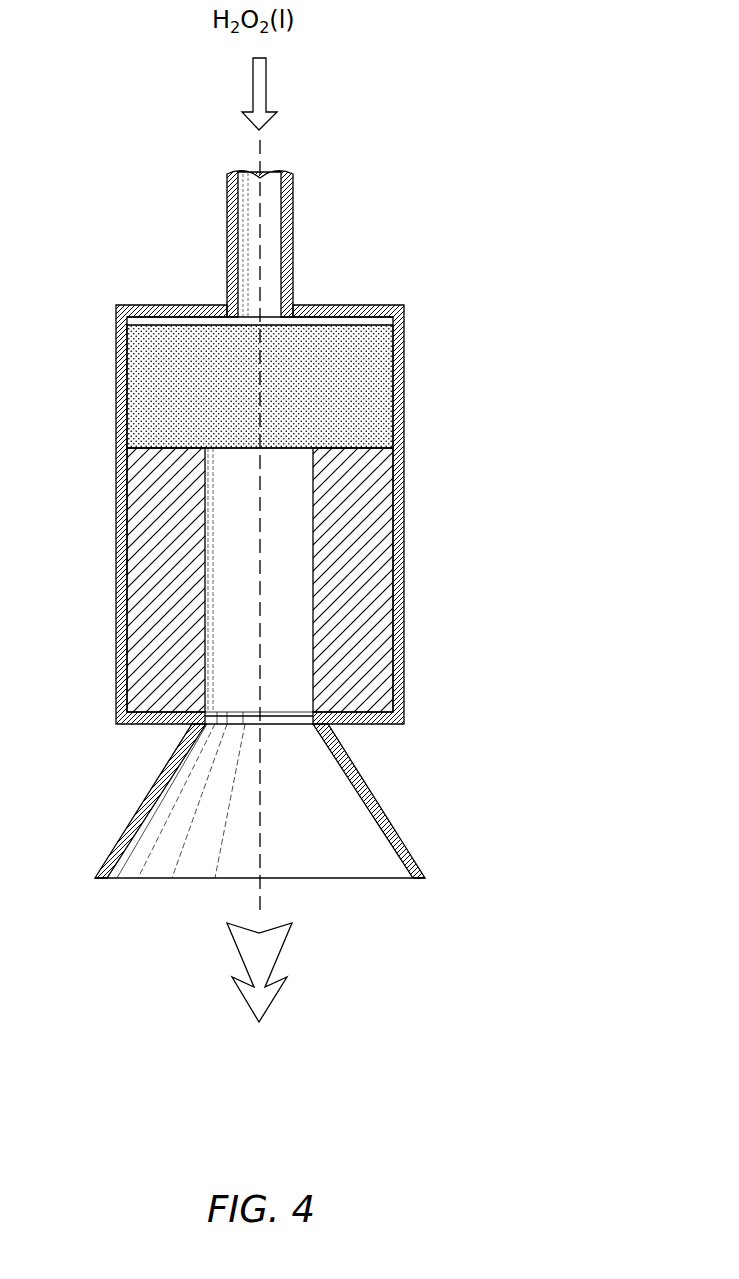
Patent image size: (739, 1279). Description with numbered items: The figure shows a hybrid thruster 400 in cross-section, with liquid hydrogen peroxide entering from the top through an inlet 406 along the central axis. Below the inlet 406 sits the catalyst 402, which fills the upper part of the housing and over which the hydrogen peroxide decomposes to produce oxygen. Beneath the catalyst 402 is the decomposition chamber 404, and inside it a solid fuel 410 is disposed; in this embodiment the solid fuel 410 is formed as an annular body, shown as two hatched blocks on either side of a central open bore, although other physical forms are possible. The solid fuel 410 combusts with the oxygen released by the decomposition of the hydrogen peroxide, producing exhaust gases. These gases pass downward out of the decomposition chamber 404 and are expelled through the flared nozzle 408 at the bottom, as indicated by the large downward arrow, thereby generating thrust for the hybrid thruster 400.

The hybrid thruster 400 is at (523, 430).
The catalyst 402 is at (127, 392).
The decomposition chamber 404 is at (116, 512).
The inlet 406 is at (227, 269).
The nozzle 408 is at (130, 823).
The solid fuel 410 is at (127, 633).